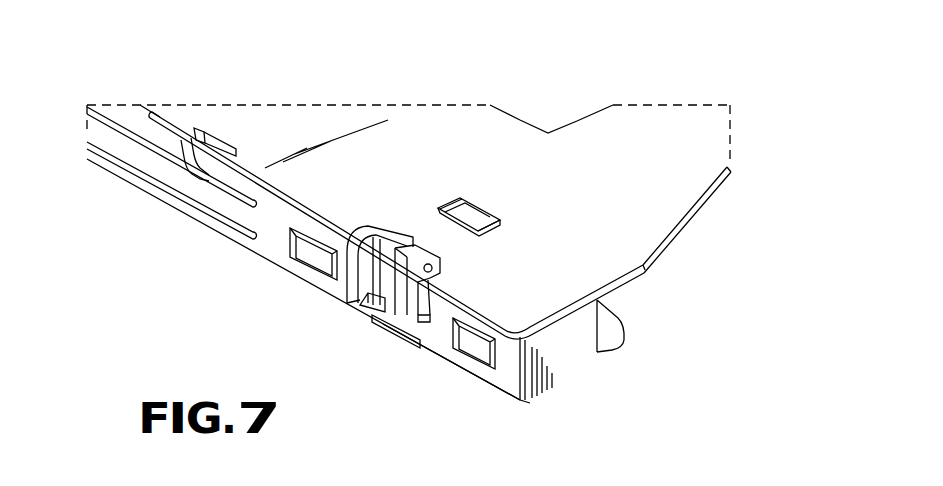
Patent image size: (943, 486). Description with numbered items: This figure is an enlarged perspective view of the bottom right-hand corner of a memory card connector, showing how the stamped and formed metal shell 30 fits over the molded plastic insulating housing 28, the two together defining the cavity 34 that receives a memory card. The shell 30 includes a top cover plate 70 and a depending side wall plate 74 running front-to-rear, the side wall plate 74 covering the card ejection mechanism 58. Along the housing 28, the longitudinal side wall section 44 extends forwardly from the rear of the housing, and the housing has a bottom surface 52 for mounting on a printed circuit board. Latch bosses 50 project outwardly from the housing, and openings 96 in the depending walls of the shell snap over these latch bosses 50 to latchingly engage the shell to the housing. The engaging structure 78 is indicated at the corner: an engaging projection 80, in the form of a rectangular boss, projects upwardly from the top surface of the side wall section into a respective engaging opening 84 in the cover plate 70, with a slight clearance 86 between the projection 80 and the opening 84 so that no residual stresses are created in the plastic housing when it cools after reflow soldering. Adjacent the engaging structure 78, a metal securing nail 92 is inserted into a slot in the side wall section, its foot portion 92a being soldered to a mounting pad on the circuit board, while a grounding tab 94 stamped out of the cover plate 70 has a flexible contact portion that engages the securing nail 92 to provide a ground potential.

The metal shell 30 is at (647, 124).
The cavity 34 is at (640, 296).
The top cover plate 70 is at (683, 183).
The side wall plate 74 is at (272, 250).
The openings 96 is at (287, 260).
The latch bosses 50 is at (320, 267).
The card ejection mechanism 58 is at (199, 181).
The engaging structure 78 is at (520, 217).
The engaging opening 84 is at (443, 207).
The engaging projection 80 is at (465, 200).
The clearance 86 is at (500, 217).
The side wall section 44 is at (550, 357).
The bottom surface 52 is at (533, 403).
The insulating housing 28 is at (564, 359).
The grounding tab 94 is at (387, 226).
The metal securing nail 92 is at (365, 350).
The foot portion 92a is at (419, 348).